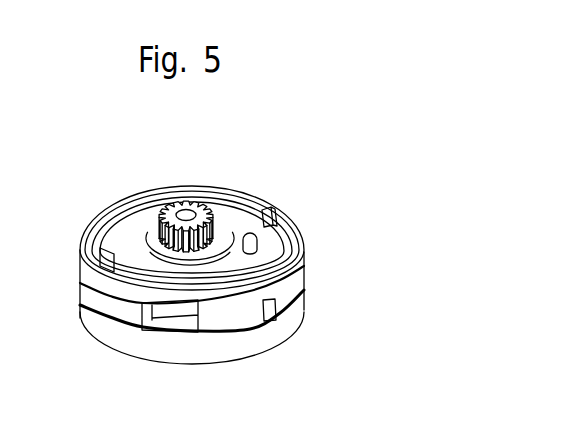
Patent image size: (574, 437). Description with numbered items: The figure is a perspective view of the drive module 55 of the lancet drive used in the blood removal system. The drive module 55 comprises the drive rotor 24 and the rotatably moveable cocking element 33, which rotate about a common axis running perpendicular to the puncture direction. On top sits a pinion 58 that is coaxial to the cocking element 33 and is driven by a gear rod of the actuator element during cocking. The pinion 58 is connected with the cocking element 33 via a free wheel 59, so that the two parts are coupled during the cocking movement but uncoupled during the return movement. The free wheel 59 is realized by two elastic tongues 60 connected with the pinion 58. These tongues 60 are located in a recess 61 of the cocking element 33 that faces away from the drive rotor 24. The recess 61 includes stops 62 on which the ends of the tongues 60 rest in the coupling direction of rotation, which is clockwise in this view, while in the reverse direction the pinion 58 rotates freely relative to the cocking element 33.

The drive rotor 24 is at (292, 320).
The cocking element 33 is at (84, 258).
The drive module 55 is at (79, 289).
The pinion 58 is at (208, 214).
The free wheel 59 is at (161, 194).
The elastic tongues 60 is at (123, 212).
The recess 61 is at (250, 240).
The stops 62 is at (80, 245).